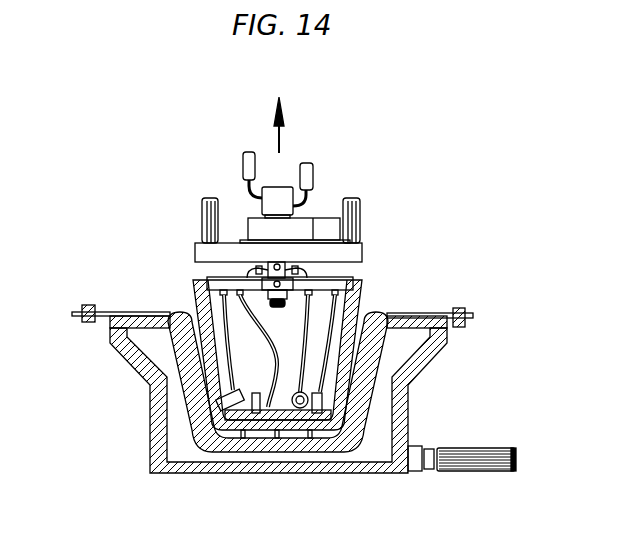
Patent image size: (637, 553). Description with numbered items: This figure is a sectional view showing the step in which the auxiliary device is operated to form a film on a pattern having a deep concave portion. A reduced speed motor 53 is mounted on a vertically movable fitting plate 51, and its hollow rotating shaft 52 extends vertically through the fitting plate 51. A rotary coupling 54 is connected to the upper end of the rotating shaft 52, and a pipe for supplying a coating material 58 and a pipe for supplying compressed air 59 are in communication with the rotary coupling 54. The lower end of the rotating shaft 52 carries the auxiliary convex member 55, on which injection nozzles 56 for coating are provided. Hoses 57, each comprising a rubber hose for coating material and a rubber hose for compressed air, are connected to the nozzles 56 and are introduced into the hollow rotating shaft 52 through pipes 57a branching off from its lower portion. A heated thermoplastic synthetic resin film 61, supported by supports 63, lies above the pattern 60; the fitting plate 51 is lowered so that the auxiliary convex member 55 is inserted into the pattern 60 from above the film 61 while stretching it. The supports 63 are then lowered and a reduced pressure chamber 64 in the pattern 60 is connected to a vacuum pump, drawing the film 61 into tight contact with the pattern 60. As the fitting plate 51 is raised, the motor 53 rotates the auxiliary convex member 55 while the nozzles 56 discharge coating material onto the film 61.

The fitting plate 51 is at (197, 249).
The hollow rotating shaft 52 is at (278, 264).
The reduced speed motor 53 is at (307, 228).
The rotary coupling 54 is at (283, 199).
The auxiliary convex member 55 is at (355, 294).
The injection nozzles 56 is at (237, 391).
The hoses 57 is at (302, 352).
The pipes 57a is at (338, 273).
The pipe for supplying a coating material 58 is at (313, 171).
The pipe for supplying compressed air 59 is at (243, 162).
The pattern 60 is at (360, 392).
The thermoplastic synthetic resin film 61 is at (127, 315).
The supports 63 is at (88, 306).
The reduced pressure chamber 64 is at (372, 449).